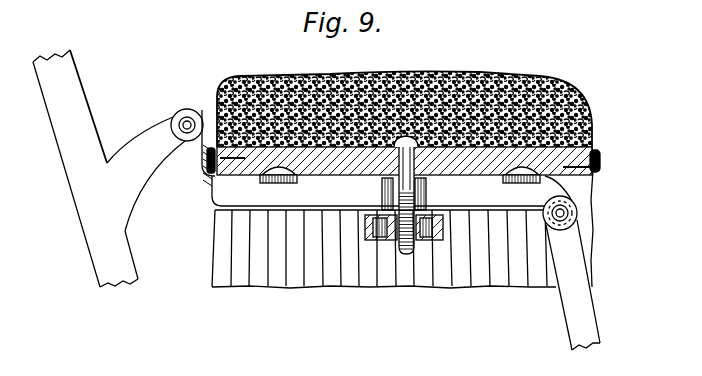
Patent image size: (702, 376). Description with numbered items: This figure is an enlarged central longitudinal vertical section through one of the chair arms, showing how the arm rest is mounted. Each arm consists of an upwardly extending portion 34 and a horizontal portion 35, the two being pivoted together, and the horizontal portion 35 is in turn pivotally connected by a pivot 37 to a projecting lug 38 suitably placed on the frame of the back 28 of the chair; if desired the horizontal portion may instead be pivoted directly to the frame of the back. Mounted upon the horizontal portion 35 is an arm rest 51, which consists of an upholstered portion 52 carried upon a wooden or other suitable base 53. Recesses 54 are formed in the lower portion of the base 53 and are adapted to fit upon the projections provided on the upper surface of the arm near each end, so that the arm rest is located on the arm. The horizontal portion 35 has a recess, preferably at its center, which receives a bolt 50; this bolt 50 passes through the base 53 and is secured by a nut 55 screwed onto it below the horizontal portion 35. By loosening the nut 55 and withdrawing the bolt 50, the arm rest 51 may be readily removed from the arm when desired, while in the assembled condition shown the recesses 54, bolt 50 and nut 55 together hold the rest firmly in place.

The back of the chair 28 is at (75, 115).
The projecting lug 38 is at (150, 138).
The pivot 37 is at (189, 122).
The upholstered portion 52 is at (395, 75).
The arm rest 51 is at (483, 78).
The base 53 is at (597, 153).
The recesses 54 is at (256, 177).
The horizontal portion 35 is at (373, 158).
The bolt 50 is at (413, 176).
The nut 55 is at (417, 242).
The upwardly extending portion 34 is at (582, 328).